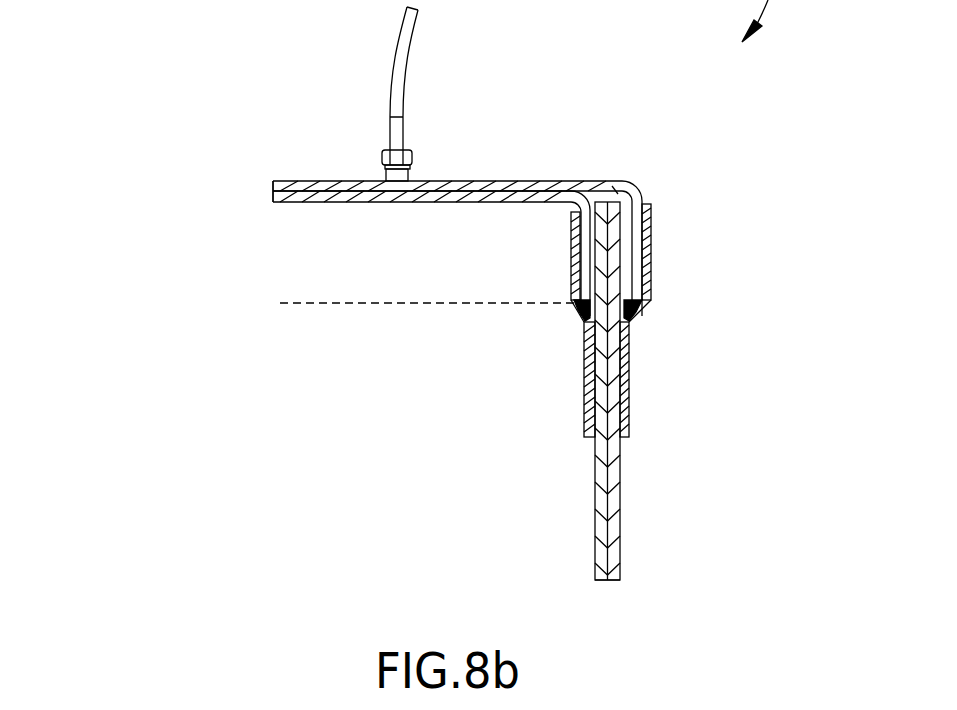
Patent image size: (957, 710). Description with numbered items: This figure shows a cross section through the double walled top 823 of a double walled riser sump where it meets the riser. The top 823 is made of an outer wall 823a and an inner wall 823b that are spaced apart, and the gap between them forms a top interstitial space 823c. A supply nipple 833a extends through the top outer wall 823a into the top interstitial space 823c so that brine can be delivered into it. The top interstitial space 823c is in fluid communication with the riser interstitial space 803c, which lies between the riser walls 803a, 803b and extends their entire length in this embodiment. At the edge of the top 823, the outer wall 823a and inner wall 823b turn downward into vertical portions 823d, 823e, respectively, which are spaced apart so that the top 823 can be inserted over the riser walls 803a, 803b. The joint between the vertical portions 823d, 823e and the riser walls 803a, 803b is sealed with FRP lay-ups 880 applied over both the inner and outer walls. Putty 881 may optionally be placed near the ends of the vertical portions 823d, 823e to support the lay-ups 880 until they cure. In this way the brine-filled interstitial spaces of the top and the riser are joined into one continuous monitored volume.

The double walled top 823 is at (438, 184).
The outer wall 823a is at (313, 181).
The inner wall 823b is at (325, 203).
The top interstitial space 823c is at (273, 193).
The vertical portion of outer wall 823d is at (647, 243).
The vertical portion of inner wall 823e is at (577, 262).
The putty 881 is at (580, 308).
The FRP lay-ups 880 is at (585, 388).
The riser wall 803a is at (608, 396).
The riser wall 803b is at (580, 553).
The riser interstitial space 803c is at (597, 503).
The supply nipple 833a is at (403, 128).